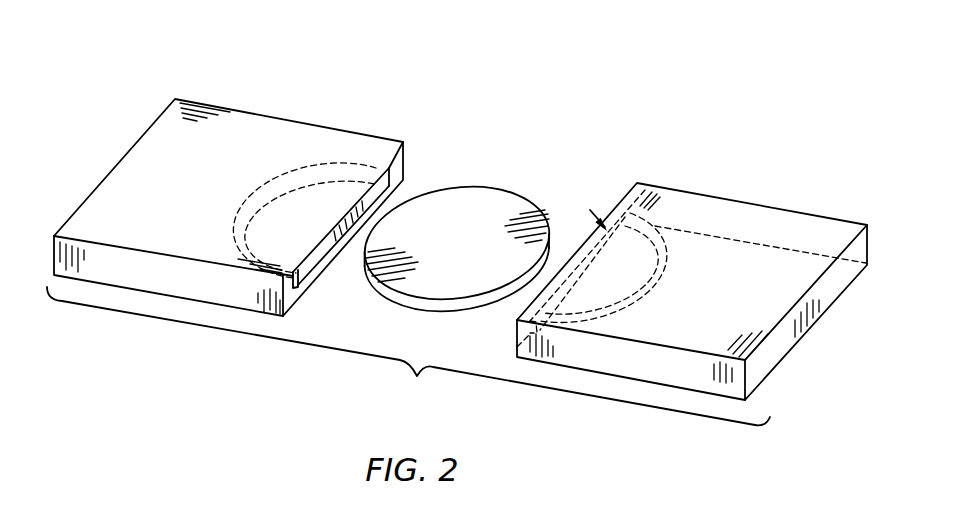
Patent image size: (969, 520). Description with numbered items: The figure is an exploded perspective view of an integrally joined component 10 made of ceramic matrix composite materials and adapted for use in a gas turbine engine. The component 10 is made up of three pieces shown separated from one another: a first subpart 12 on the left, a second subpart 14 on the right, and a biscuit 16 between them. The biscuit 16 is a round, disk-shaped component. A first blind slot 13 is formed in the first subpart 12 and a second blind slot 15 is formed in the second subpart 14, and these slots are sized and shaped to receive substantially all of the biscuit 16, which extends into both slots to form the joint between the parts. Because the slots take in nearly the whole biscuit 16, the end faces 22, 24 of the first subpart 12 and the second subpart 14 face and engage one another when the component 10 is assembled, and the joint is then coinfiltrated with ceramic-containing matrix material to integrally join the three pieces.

The integrally joined component 10 is at (634, 69).
The first subpart 12 is at (212, 95).
The first blind slot 13 is at (395, 195).
The second subpart 14 is at (781, 199).
The second blind slot 15 is at (597, 216).
The biscuit 16 is at (500, 182).
The end face 22 is at (403, 153).
The end face 24 is at (623, 198).